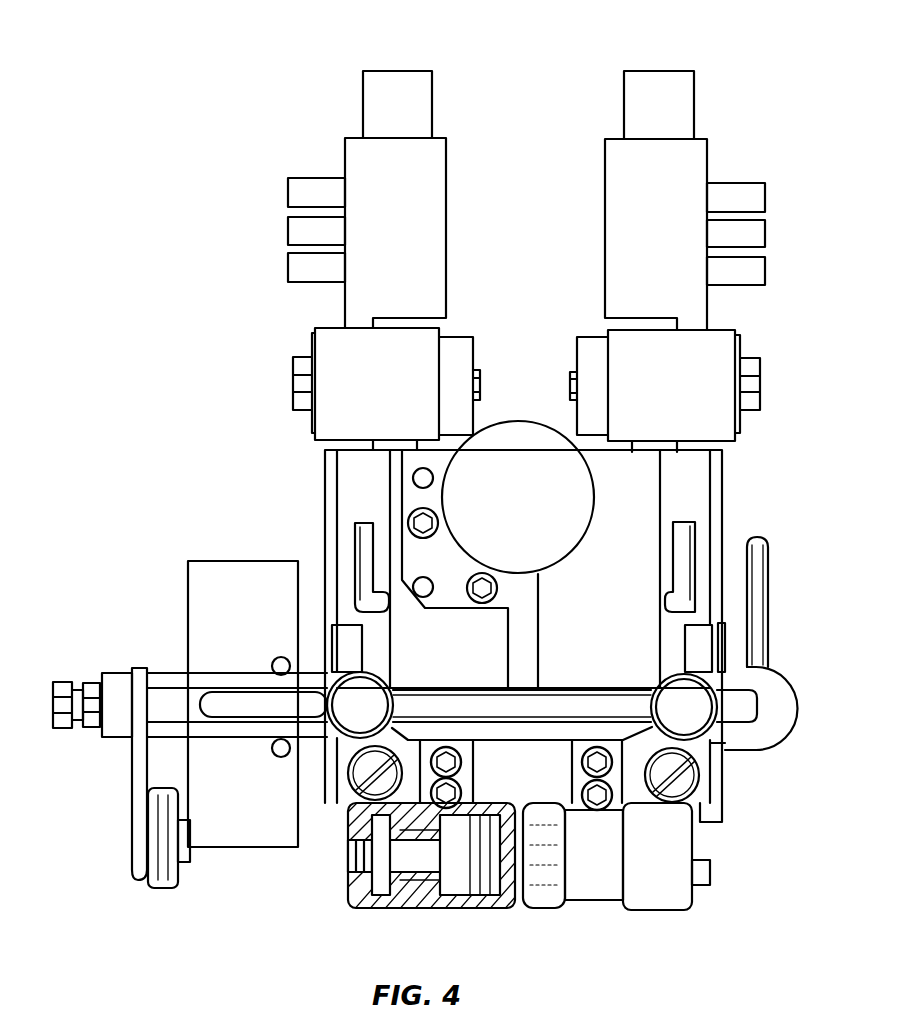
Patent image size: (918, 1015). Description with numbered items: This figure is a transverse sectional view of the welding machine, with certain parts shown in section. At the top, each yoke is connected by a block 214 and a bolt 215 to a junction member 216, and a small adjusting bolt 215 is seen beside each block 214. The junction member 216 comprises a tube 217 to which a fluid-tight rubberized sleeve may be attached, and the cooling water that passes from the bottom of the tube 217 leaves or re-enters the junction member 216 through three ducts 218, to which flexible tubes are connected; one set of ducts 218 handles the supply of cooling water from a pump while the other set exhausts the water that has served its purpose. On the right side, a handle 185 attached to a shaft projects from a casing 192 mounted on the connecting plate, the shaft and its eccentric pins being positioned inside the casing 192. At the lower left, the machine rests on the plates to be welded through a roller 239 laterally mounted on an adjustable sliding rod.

The tube 217 is at (650, 118).
The junction member 216 is at (620, 197).
The ducts 218 is at (292, 270).
The block 214 is at (627, 370).
The bolt 215 is at (565, 385).
The handle 185 is at (755, 540).
The casing 192 is at (740, 745).
The roller 239 is at (187, 878).